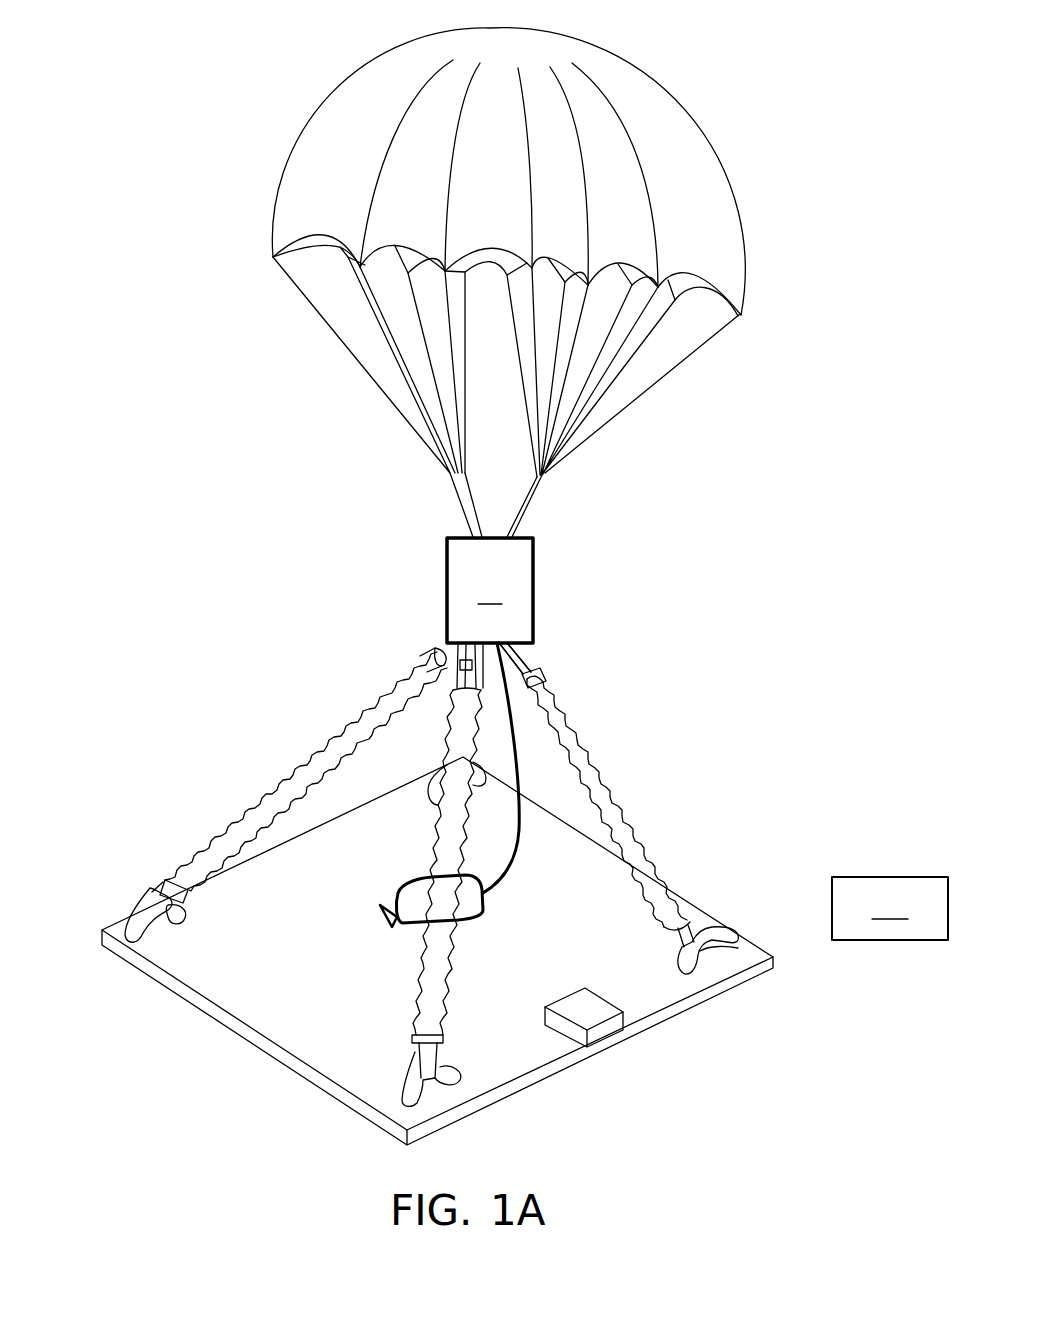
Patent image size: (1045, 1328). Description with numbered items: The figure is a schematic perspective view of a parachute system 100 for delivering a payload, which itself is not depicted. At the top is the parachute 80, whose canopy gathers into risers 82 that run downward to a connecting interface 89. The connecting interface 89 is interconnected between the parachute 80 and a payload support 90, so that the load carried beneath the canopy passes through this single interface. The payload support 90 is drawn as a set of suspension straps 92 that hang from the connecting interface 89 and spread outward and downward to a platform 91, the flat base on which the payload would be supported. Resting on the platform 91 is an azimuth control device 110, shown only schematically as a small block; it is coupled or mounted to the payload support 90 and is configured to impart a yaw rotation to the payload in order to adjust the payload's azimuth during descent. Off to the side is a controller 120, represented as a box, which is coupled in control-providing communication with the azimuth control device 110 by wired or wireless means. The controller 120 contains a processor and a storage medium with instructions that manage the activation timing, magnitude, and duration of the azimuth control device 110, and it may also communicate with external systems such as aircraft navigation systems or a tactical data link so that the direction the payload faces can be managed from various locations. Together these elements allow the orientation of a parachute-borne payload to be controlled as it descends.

The parachute system 100 is at (106, 245).
The parachute 80 is at (687, 447).
The risers 82 is at (530, 509).
The connecting interface 89 is at (490, 590).
The payload support 90 is at (635, 710).
The suspension straps 92 is at (520, 664).
The platform 91 is at (657, 972).
The azimuth control device 110 is at (590, 1013).
The controller 120 is at (890, 908).